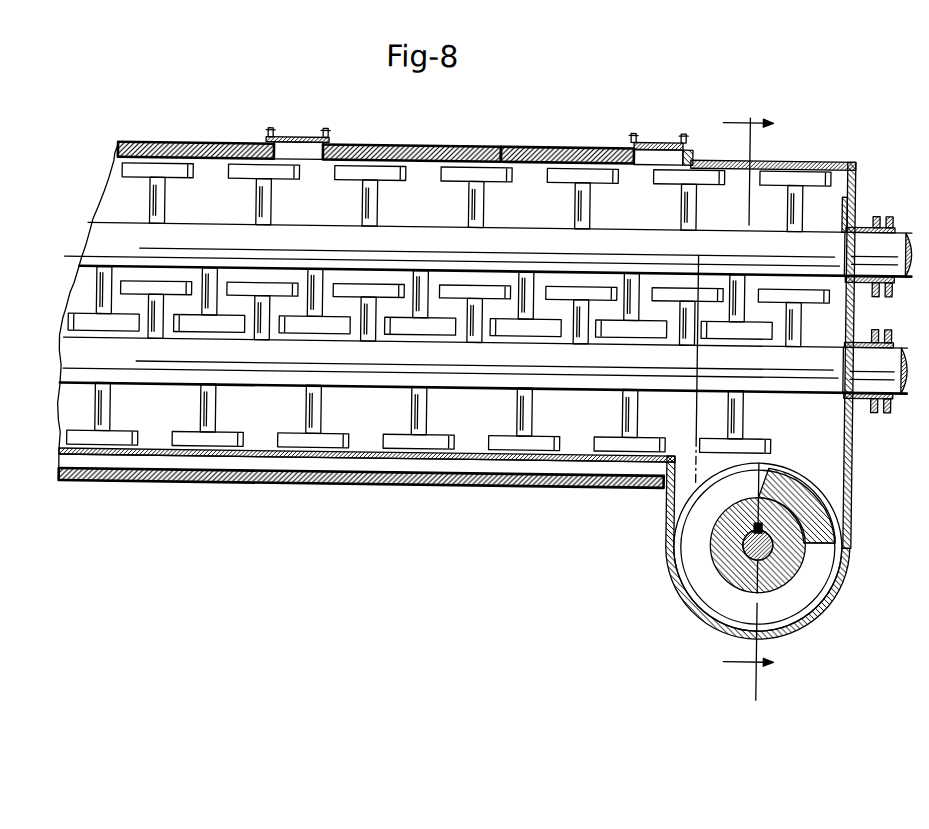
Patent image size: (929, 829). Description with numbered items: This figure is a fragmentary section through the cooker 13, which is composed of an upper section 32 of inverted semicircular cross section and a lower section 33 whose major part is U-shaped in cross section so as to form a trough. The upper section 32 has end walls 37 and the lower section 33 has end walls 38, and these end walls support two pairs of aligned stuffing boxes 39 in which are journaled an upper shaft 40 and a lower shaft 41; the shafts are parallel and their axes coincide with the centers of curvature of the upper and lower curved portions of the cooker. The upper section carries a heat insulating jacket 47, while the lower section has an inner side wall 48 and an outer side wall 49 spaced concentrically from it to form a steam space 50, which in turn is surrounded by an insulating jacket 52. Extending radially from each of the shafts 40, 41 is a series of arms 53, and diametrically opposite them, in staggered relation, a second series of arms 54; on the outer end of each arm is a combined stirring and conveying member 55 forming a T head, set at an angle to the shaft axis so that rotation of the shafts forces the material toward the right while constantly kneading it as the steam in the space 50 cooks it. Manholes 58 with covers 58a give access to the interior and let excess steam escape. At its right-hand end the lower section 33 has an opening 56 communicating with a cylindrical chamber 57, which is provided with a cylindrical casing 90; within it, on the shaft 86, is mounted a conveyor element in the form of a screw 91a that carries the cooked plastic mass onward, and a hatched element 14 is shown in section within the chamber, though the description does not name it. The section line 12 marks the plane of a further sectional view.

The section line 12— 12 is at (751, 406).
The cooker 13 is at (524, 174).
The rotor vane 14 is at (814, 512).
The upper section 32 is at (454, 143).
The lower section 33 is at (82, 407).
The end walls 37 is at (856, 176).
The end walls 38 is at (857, 395).
The stuffing boxes 39 is at (866, 326).
The upper shaft 40 is at (318, 237).
The lower shaft 41 is at (509, 369).
The heat insulating jacket 47 is at (195, 141).
The inner side wall 48 is at (208, 451).
The outer side wall 49 is at (303, 459).
The steam space 50 is at (386, 458).
The insulating jacket 52 is at (572, 145).
The arms 53 is at (470, 197).
The second series of arms 54 is at (367, 293).
The combined stirring and conveying member 55 is at (560, 174).
The opening 56 is at (835, 454).
The cylindrical chamber 57 is at (843, 570).
The manholes 58 is at (311, 136).
The covers 58a is at (299, 134).
The shaft 86 is at (747, 544).
The cylindrical casing 90 is at (720, 614).
The screw 91a is at (826, 528).